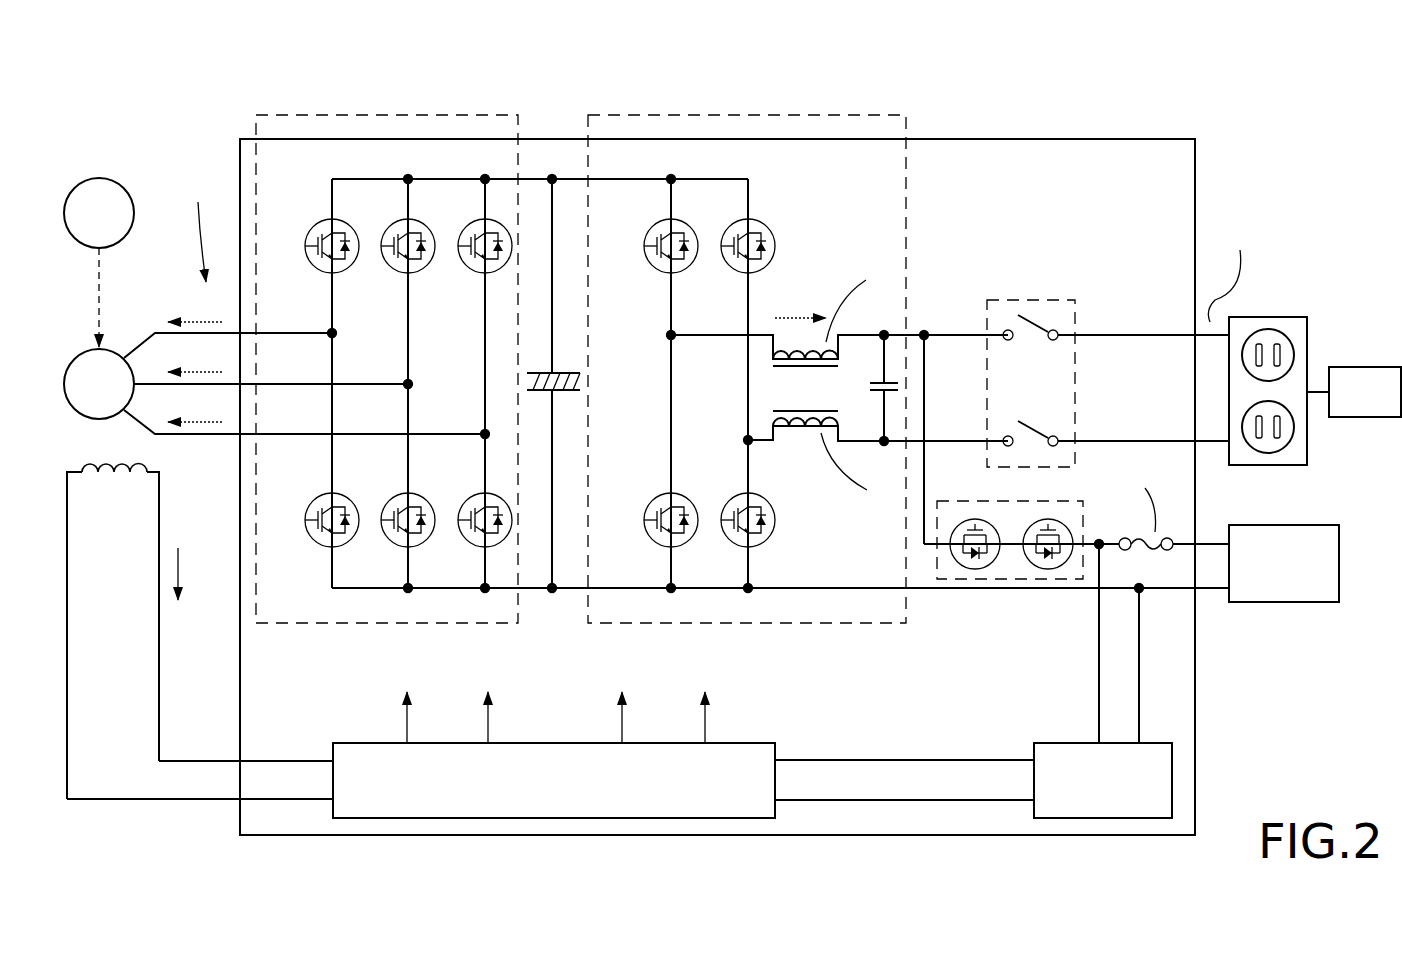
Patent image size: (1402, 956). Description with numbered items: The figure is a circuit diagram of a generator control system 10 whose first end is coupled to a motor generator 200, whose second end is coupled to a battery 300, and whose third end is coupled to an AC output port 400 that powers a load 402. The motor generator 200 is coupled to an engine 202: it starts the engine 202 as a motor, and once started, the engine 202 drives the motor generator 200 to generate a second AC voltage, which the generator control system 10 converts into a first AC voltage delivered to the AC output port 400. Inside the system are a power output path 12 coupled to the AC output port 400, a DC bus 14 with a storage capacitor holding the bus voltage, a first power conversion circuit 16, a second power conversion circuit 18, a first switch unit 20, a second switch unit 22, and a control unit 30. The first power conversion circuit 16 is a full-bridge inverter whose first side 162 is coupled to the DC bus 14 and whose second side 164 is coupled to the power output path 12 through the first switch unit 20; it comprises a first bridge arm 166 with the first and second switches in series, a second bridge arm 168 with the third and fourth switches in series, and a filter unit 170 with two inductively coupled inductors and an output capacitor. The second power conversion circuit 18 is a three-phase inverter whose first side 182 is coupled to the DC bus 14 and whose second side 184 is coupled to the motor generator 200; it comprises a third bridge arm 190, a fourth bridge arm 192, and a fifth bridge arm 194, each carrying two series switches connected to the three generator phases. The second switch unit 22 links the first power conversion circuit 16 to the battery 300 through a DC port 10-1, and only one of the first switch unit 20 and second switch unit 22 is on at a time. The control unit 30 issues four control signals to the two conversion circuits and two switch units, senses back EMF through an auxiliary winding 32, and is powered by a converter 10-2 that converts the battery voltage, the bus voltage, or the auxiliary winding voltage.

The generator control system 10 is at (1330, 71).
The DC port 10-1 is at (1196, 598).
The converter 10-2 is at (1060, 757).
The power output path 12 is at (1150, 320).
The DC bus 14 is at (552, 165).
The first power conversion circuit 16 is at (840, 125).
The second power conversion circuit 18 is at (282, 125).
The first switch unit 20 is at (1065, 300).
The second switch unit 22 is at (1005, 572).
The control unit 30 is at (367, 759).
The auxiliary winding 32 is at (106, 500).
The first side 162 is at (612, 165).
The second side 164 is at (921, 315).
The first bridge arm 166 is at (676, 165).
The second bridge arm 168 is at (750, 165).
The filter unit 170 is at (806, 452).
The first side 182 is at (474, 598).
The second side 184 is at (272, 300).
The third bridge arm 190 is at (483, 165).
The fourth bridge arm 192 is at (408, 165).
The fifth bridge arm 194 is at (332, 165).
The motor generator 200 is at (113, 358).
The engine 202 is at (121, 227).
The battery 300 is at (1320, 537).
The AC output port 400 is at (1296, 318).
The load 402 is at (1342, 372).